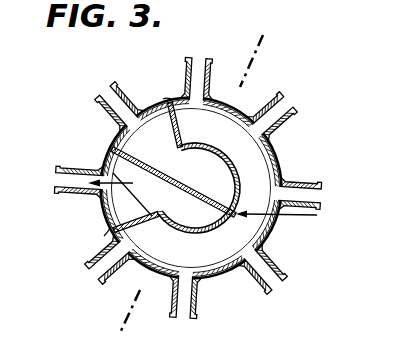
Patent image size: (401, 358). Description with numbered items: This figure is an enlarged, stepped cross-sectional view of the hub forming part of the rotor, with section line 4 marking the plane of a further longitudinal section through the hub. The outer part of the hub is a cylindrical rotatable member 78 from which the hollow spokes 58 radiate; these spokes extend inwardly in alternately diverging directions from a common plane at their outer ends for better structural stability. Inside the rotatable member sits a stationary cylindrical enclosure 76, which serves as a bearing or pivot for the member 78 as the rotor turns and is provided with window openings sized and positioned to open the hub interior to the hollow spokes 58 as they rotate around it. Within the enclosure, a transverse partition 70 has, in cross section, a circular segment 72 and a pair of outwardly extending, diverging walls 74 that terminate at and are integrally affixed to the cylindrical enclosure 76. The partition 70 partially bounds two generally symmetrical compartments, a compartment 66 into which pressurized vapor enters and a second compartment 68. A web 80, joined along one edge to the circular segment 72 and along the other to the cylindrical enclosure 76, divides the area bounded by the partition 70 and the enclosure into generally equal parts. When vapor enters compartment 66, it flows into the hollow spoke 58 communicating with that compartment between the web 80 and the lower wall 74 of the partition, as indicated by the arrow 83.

The section line 4- 4 is at (266, 54).
The hollow spokes 58 is at (211, 73).
The hub compartment 66 is at (190, 214).
The second hub compartment 68 is at (208, 173).
The transverse partition 70 is at (292, 216).
The circular segment 72 is at (240, 186).
The diverging walls 74 is at (183, 124).
The cylindrical enclosure 76 is at (163, 98).
The cylindrical rotatable member 78 is at (283, 143).
The web 80 is at (103, 238).
The flow arrow 83 is at (105, 203).